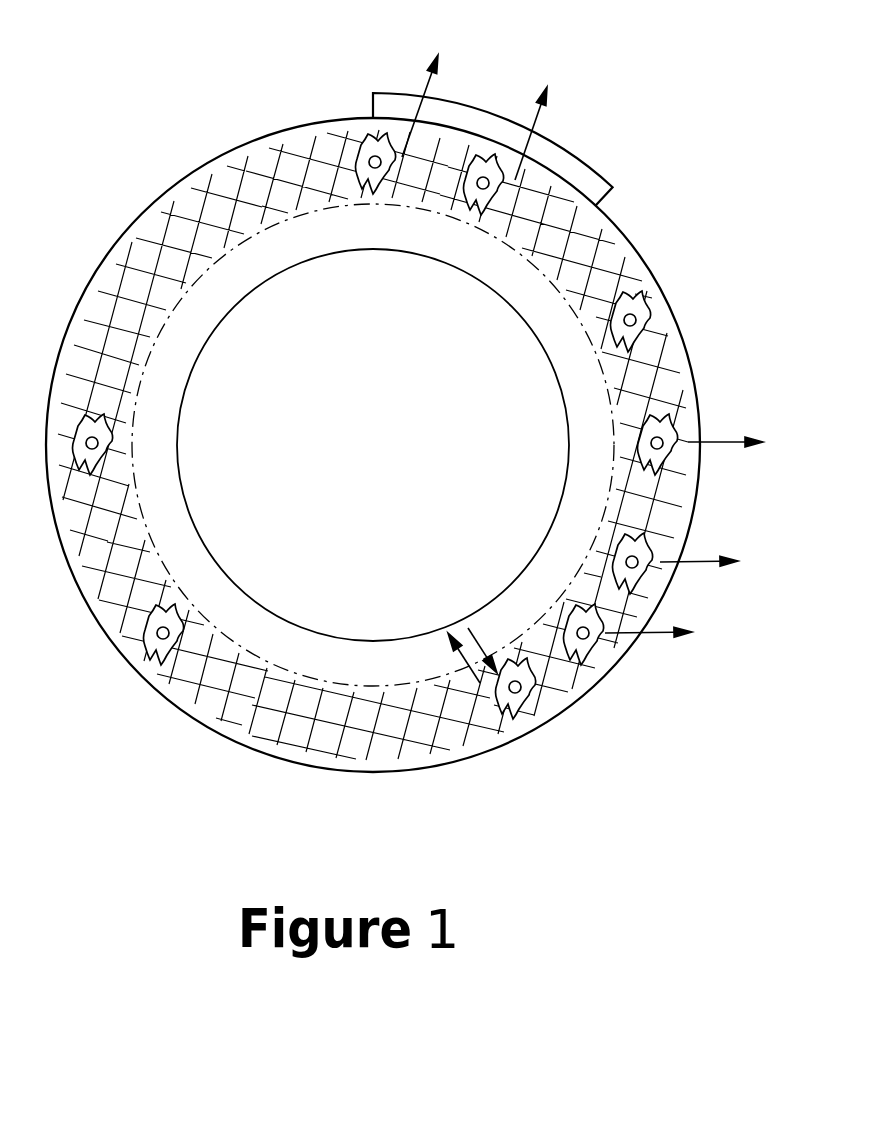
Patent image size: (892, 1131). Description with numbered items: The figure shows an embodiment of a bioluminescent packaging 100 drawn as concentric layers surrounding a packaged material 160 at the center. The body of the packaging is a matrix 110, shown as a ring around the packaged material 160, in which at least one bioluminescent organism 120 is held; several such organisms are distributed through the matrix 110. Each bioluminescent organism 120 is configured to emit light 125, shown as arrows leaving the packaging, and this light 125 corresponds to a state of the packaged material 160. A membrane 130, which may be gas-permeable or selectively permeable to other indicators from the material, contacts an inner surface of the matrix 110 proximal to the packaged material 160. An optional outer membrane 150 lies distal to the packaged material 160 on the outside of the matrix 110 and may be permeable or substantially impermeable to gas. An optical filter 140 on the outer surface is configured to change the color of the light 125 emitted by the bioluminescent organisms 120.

The bioluminescent packaging 100 is at (221, 69).
The matrix 110 is at (246, 700).
The bioluminescent organism 120 is at (523, 705).
The light 125 is at (652, 632).
The membrane 130 is at (680, 531).
The optical filter 140 is at (565, 158).
The outer membrane 150 is at (692, 353).
The packaged material 160 is at (517, 343).